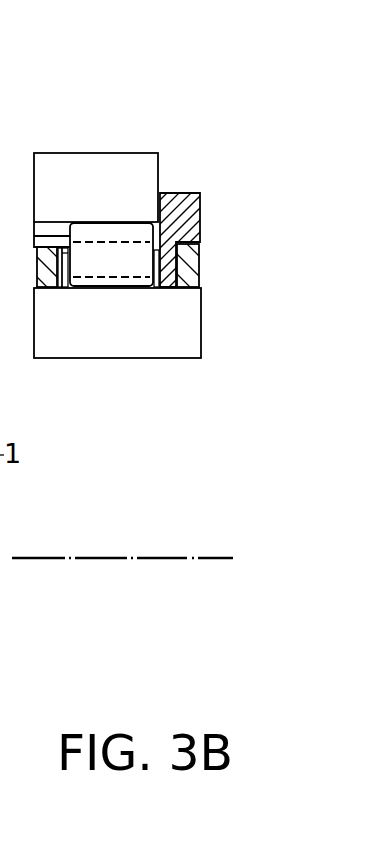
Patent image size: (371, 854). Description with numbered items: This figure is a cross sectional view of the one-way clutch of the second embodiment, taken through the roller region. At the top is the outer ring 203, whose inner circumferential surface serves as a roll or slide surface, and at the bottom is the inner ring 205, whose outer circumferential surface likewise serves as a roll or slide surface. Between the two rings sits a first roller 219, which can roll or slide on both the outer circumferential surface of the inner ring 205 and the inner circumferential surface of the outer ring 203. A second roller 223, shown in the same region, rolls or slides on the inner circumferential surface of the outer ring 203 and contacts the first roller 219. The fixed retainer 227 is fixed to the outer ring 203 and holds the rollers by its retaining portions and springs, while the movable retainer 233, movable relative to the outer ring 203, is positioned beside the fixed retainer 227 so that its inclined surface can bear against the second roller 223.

The outer ring 203 is at (123, 185).
The first roller 219 is at (92, 232).
The second roller 223 is at (120, 264).
The fixed retainer 227 is at (206, 269).
The movable retainer 233 is at (187, 176).
The inner ring 205 is at (82, 342).